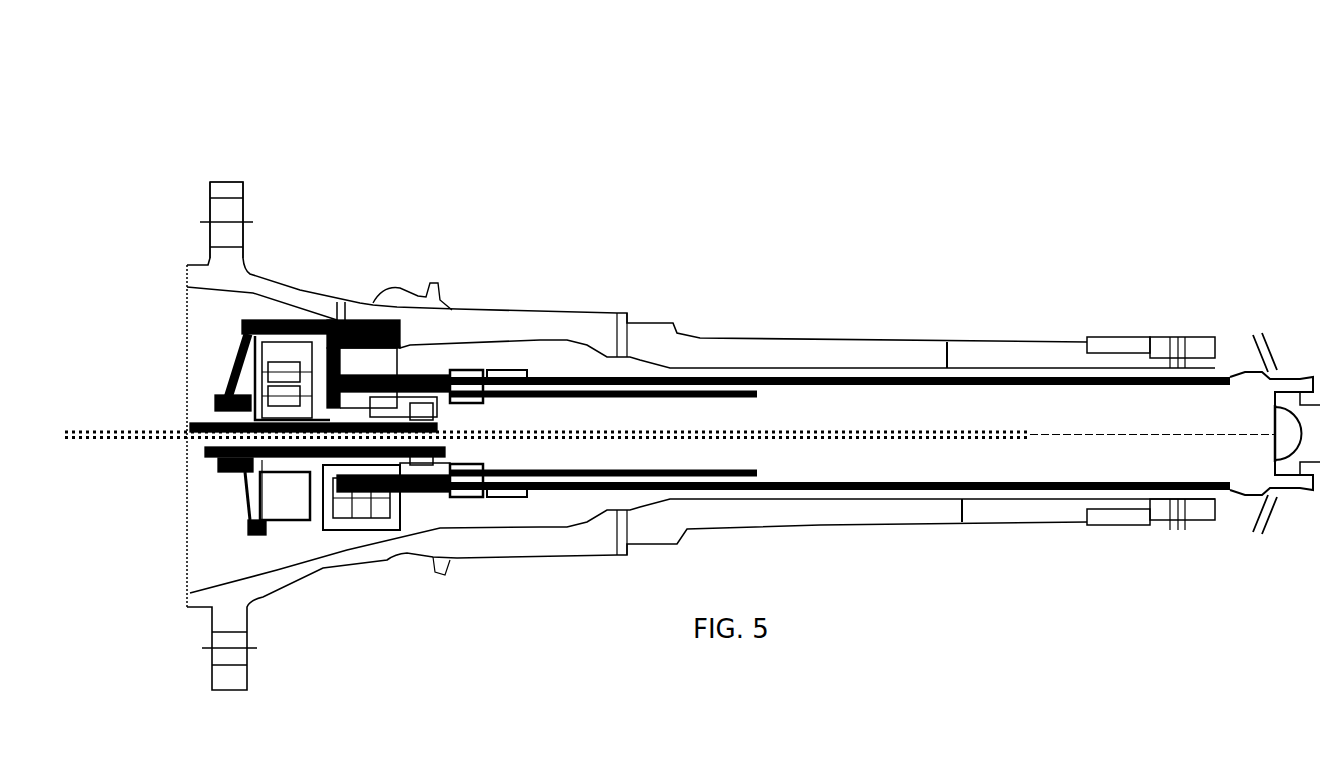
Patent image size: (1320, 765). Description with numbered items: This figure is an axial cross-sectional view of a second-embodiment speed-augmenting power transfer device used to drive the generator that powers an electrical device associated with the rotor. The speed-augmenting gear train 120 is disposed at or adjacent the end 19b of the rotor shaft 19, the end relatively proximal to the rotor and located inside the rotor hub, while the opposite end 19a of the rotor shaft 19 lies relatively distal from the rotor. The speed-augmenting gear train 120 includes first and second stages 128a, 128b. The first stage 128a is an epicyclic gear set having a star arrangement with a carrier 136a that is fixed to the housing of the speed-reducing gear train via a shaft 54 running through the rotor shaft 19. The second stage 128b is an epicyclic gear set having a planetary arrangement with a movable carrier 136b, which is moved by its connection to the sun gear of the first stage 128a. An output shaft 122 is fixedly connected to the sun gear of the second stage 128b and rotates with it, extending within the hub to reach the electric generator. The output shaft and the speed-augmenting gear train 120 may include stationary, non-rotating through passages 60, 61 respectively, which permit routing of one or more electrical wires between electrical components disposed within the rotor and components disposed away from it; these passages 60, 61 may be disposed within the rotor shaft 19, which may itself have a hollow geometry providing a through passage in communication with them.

The rotor shaft 19 is at (507, 335).
The end of the rotor shaft 19a is at (1200, 340).
The end of the rotor shaft 19b is at (218, 283).
The shaft 54 is at (541, 392).
The through passage 60 is at (826, 425).
The through passage 61 is at (362, 435).
The speed-augmenting gear train 120 is at (185, 228).
The output shaft 122 is at (212, 420).
The first stage 128a is at (388, 530).
The second stage 128b is at (328, 530).
The carrier 136a is at (353, 370).
The carrier 136b is at (290, 482).